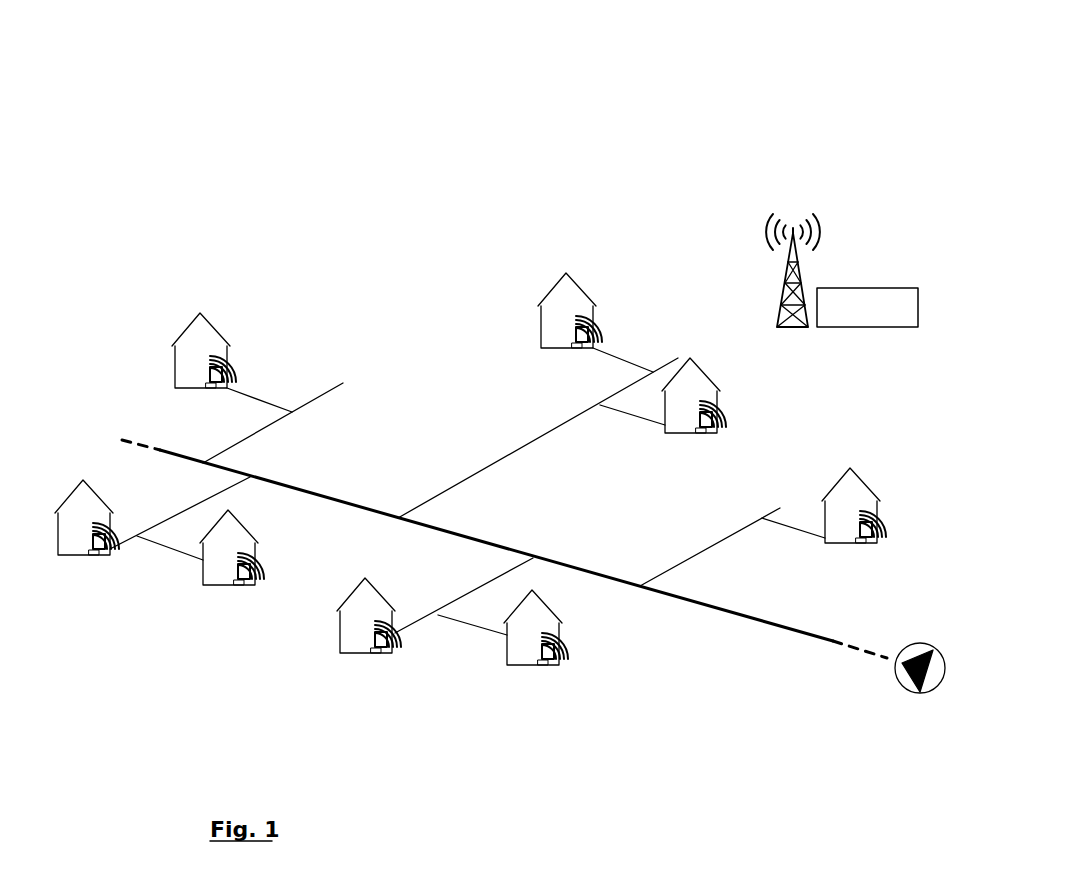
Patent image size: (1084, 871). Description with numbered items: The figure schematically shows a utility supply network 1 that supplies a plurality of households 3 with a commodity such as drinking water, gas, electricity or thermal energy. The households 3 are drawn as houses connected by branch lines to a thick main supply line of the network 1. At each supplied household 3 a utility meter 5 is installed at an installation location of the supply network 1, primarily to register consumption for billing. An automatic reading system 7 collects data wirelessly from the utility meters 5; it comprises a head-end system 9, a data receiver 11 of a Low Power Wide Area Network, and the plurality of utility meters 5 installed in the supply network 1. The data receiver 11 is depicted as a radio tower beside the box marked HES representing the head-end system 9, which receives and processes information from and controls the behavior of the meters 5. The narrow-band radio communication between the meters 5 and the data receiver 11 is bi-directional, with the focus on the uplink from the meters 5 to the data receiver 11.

The utility supply network 1 is at (362, 478).
The household 3 is at (202, 332).
The utility meter 5 is at (212, 390).
The automatic reading system 7 is at (792, 128).
The head-end system 9 is at (882, 288).
The data receiver 11 is at (778, 292).